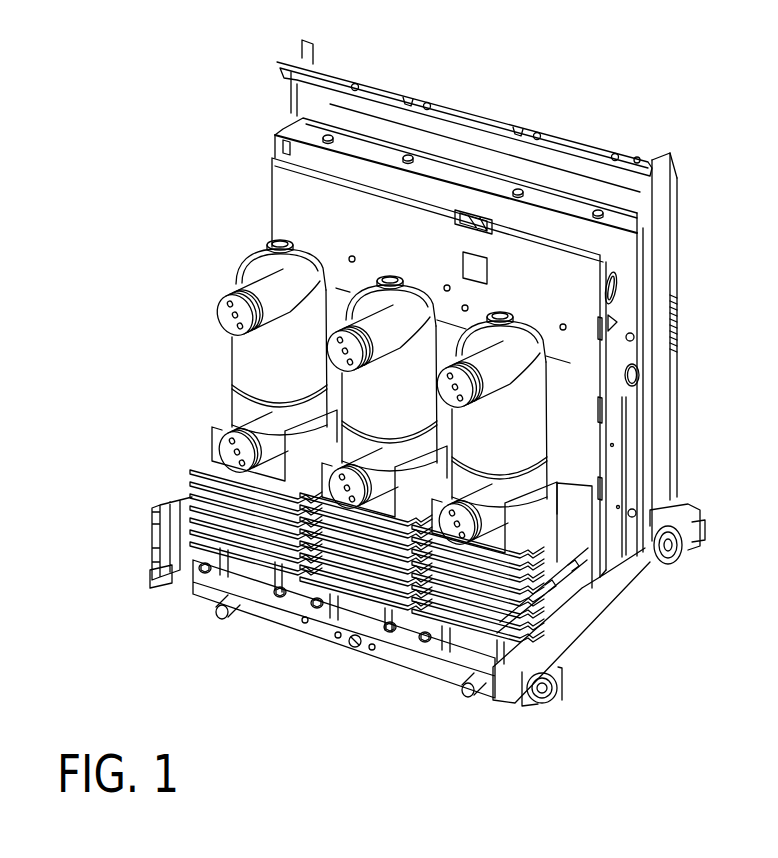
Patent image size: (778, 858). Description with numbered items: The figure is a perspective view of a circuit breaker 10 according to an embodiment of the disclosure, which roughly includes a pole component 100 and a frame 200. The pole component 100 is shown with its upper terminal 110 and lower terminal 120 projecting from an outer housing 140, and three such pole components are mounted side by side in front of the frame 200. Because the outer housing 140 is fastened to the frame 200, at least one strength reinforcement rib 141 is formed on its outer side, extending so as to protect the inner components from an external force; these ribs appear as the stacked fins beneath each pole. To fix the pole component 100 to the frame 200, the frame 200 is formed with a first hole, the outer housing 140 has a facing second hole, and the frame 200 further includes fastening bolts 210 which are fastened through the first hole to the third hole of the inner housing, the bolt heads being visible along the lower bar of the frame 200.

The circuit breaker 10 is at (665, 35).
The pole component 100 is at (100, 310).
The upper terminal 110 is at (213, 317).
The lower terminal 120 is at (212, 445).
The outer housing 140 is at (231, 359).
The strength reinforcement rib 141 is at (200, 472).
The frame 200 is at (612, 387).
The fastening bolts 210 is at (205, 574).